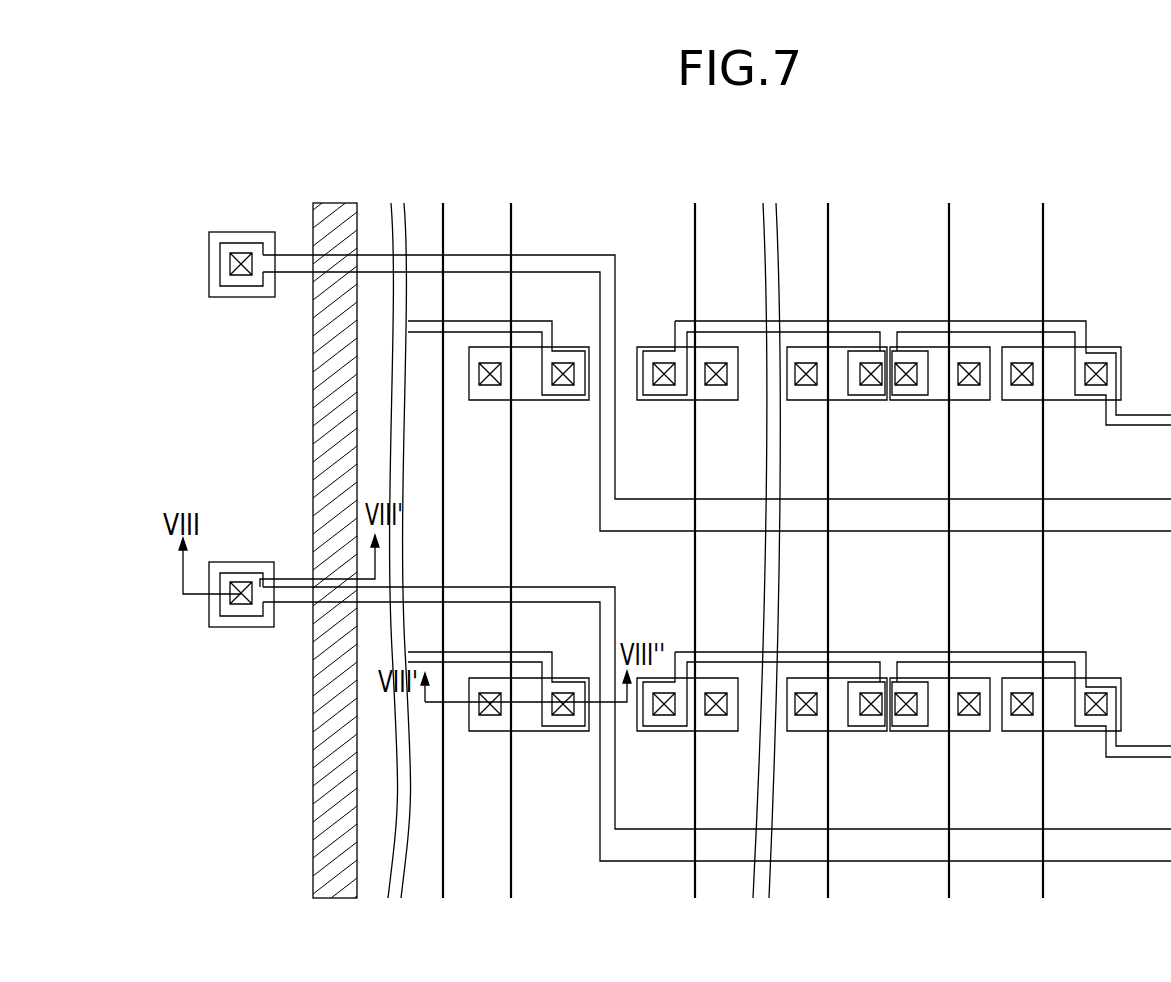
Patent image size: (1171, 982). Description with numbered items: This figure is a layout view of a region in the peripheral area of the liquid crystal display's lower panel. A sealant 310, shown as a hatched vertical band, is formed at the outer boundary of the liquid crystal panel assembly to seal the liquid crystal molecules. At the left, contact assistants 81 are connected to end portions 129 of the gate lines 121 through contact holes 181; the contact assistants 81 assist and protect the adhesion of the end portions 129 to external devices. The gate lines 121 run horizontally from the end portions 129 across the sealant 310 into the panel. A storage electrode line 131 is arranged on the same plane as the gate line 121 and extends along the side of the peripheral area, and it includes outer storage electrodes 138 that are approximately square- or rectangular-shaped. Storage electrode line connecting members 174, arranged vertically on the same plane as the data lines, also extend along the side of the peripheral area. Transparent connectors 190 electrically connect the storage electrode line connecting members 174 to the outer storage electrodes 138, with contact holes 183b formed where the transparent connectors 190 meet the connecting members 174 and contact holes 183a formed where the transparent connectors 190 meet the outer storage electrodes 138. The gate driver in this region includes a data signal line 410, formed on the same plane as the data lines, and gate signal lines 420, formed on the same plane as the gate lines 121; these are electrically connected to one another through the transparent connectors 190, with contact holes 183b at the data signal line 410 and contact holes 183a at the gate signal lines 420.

The contact assistant 81 is at (226, 232).
The end portion 129 is at (249, 243).
The contact hole 181 is at (241, 277).
The sealant 310 is at (313, 414).
The gate line 121 is at (542, 600).
The storage electrode line connecting member 174 is at (950, 565).
The data signal line 410 is at (445, 860).
The gate signal line 420 is at (540, 660).
The storage electrode line 131 is at (718, 658).
The outer storage electrode 138 is at (1093, 677).
The contact hole 183a is at (563, 700).
The contact hole 183b is at (490, 693).
The transparent connector 190 is at (532, 732).